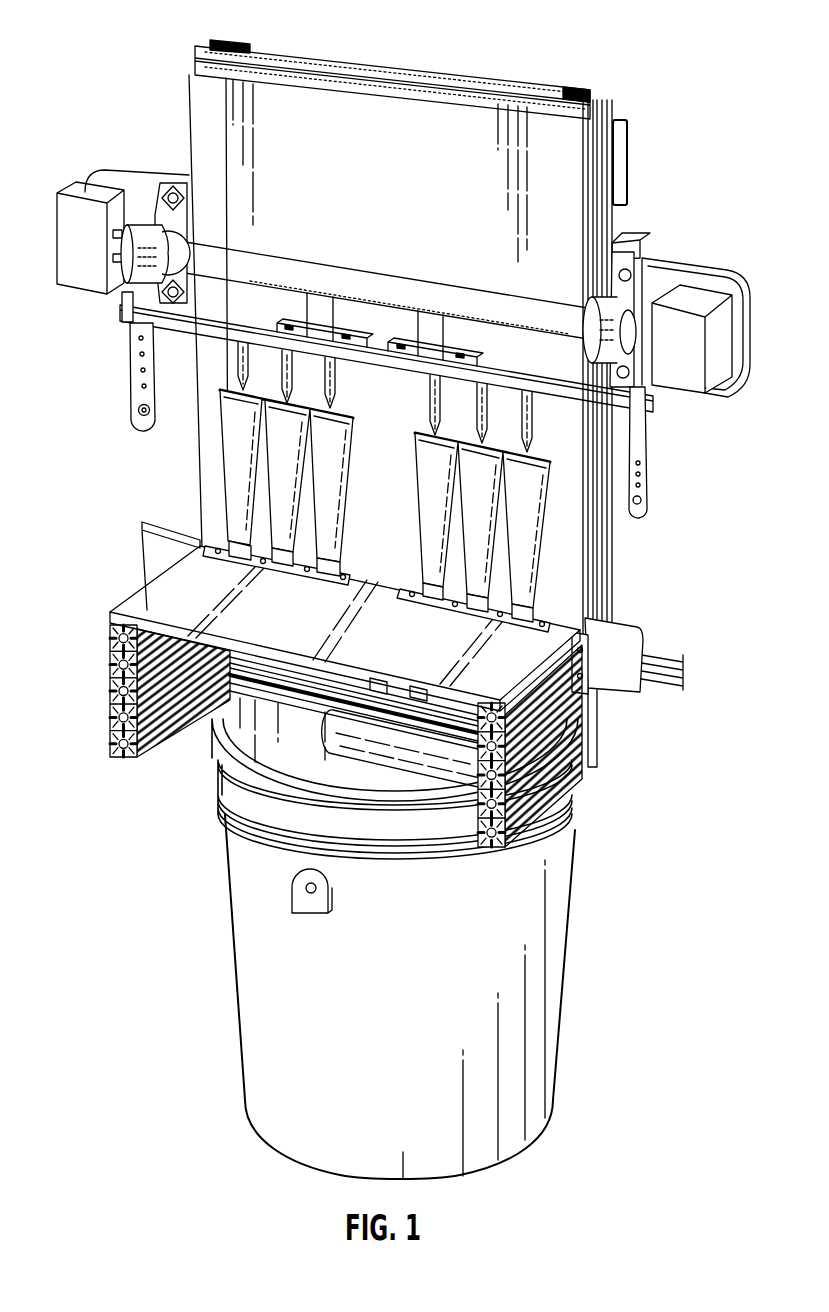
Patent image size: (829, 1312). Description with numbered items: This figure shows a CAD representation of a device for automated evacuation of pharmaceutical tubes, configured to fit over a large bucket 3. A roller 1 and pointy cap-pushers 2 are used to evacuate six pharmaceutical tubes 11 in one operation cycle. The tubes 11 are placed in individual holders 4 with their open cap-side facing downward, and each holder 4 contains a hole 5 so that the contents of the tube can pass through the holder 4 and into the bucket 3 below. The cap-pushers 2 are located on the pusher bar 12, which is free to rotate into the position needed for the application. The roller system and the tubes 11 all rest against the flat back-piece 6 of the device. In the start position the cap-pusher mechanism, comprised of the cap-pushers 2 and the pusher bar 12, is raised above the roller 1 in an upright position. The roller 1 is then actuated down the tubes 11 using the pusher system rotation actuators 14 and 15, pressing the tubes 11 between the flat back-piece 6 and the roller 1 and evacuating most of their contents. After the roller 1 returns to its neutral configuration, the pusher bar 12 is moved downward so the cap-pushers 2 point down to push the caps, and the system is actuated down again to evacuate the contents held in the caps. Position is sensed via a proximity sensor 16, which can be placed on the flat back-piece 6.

The roller 1 is at (388, 287).
The cap-pushers 2 is at (533, 413).
The bucket 3 is at (565, 928).
The holder 4 is at (522, 637).
The hole 5 is at (460, 597).
The flat back-piece 6 is at (429, 87).
The pharmaceutical tubes 11 is at (534, 581).
The pusher bar 12 is at (118, 306).
The pusher system rotation actuator 14 is at (690, 299).
The pusher system rotation actuator 15 is at (88, 207).
The proximity sensor 16 is at (602, 580).